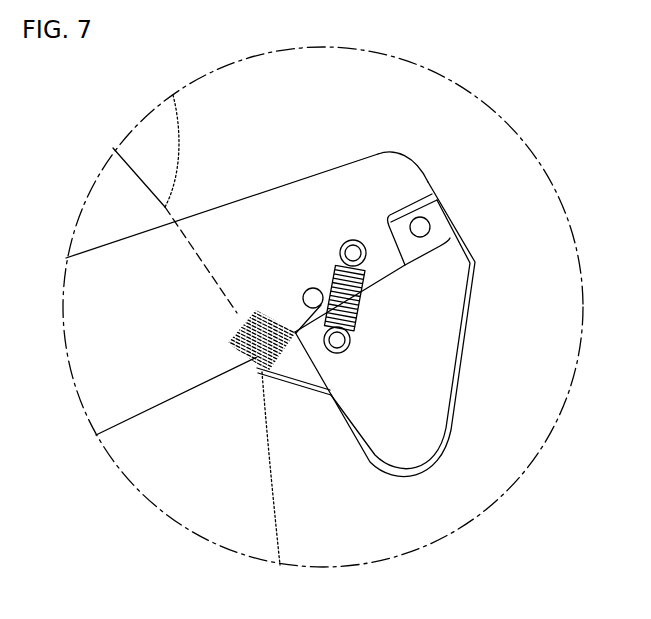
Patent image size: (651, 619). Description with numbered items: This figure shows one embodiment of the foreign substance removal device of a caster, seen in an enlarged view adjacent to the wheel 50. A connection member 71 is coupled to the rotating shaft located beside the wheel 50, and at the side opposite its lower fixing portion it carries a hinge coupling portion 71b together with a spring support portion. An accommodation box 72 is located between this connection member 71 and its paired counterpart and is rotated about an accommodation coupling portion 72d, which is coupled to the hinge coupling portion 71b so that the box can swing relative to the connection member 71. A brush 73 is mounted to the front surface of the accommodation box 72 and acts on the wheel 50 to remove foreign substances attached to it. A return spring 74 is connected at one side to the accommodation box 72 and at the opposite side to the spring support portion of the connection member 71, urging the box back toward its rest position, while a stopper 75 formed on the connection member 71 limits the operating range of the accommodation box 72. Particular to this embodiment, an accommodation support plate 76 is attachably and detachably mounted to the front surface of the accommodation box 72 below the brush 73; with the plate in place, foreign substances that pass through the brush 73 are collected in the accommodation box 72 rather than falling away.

The wheel 50 is at (172, 92).
The connection member 71 is at (343, 187).
The hinge coupling portion 71b is at (418, 205).
The accommodation coupling portion 72d is at (414, 211).
The accommodation box 72 is at (460, 393).
The brush 73 is at (255, 312).
The return spring 74 is at (357, 311).
The stopper 75 is at (309, 289).
The accommodation support plate 76 is at (297, 383).